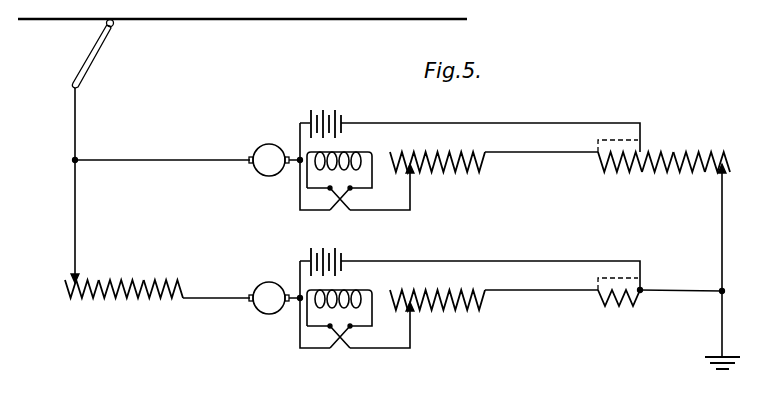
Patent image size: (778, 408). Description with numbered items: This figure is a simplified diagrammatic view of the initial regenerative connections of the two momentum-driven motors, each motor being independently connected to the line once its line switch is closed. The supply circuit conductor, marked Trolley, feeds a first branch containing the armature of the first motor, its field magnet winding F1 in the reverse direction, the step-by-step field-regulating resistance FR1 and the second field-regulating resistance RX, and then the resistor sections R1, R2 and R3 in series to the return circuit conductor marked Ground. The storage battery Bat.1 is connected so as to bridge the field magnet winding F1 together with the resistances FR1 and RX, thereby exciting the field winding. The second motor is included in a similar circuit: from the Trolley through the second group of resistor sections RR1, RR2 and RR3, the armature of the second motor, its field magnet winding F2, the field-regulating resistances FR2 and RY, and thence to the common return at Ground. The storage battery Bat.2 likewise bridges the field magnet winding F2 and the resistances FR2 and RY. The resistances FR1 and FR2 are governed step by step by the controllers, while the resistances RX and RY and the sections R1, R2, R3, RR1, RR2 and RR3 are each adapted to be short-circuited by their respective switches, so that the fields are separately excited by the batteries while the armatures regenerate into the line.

The supply circuit conductor Trolley is at (242, 147).
The storage battery Bat.1 is at (470, 121).
The field magnet winding F1 is at (339, 174).
The step-by-step field-regulating resistance FR1 is at (437, 155).
The field-regulating resistance RX is at (620, 175).
The resistor section R1 is at (656, 175).
The resistor section R2 is at (690, 174).
The resistor section R3 is at (711, 174).
The resistor section RR1 is at (77, 296).
The resistor section RR2 is at (121, 299).
The resistor section RR3 is at (164, 299).
The storage battery Bat.2 is at (470, 267).
The field magnet winding F2 is at (339, 312).
The step-by-step field-regulating resistance FR2 is at (437, 293).
The field-regulating resistance RY is at (619, 303).
The return circuit conductor Ground is at (714, 377).